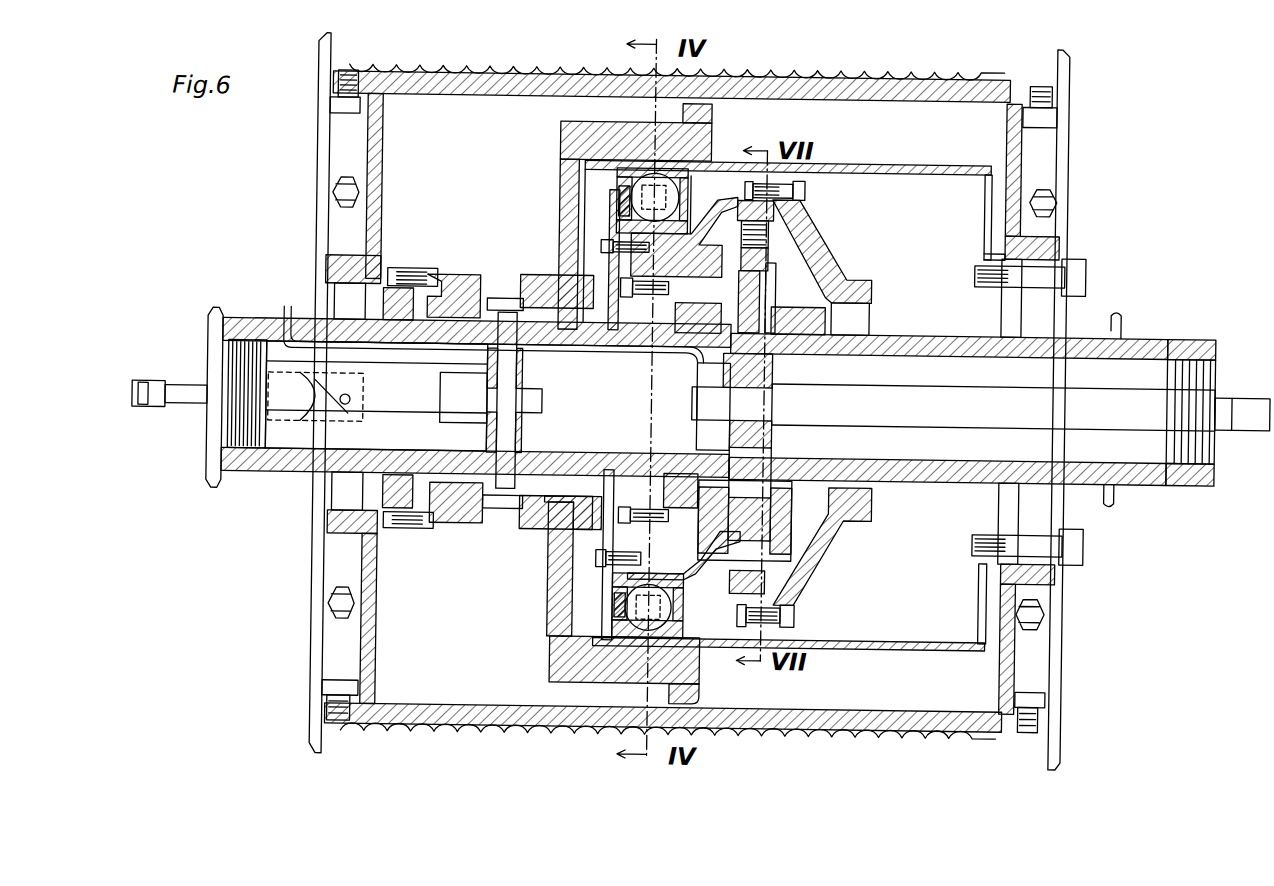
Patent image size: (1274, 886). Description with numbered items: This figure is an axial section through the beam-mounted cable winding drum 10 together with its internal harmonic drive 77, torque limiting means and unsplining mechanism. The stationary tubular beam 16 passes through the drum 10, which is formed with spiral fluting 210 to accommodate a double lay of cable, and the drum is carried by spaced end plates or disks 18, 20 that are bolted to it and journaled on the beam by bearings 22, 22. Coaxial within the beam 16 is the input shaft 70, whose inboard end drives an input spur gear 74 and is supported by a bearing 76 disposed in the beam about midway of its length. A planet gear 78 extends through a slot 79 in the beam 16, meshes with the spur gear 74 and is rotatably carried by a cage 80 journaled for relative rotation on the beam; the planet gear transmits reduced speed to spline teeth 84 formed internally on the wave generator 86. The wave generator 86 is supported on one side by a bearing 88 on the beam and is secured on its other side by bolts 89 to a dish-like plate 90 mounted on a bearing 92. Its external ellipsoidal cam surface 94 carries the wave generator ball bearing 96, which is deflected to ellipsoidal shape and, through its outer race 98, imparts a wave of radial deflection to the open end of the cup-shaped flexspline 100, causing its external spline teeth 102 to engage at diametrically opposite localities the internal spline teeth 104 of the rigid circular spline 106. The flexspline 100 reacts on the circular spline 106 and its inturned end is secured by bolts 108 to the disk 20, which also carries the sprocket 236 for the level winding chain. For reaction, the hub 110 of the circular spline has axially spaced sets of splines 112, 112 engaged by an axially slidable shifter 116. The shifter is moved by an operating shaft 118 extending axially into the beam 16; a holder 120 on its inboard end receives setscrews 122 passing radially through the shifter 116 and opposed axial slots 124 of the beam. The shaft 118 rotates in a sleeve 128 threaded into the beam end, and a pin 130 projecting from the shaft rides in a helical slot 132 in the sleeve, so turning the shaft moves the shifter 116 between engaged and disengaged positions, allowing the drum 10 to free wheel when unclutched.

The cable winding drum 10 is at (808, 72).
The tubular beam 16 is at (918, 338).
The end plate 18 is at (326, 130).
The end plate 20 is at (1067, 100).
The bearing 22 is at (345, 492).
The input shaft 70 is at (940, 422).
The input spur gear 74 is at (775, 372).
The bearing 76 is at (696, 428).
The harmonic drive 77 is at (731, 142).
The planet gear 78 is at (770, 468).
The slot 79 is at (742, 452).
The cage 80 is at (805, 540).
The spline teeth 84 is at (770, 255).
The wave generator 86 is at (684, 237).
The bearing 88 is at (655, 510).
The bolts 89 is at (804, 190).
The dish-like plate 90 is at (822, 265).
The bearing 92 is at (862, 325).
The ellipsoidal cam surface 94 is at (612, 214).
The wave generator ball bearing 96 is at (699, 205).
The outer race 98 is at (686, 178).
The flexspline 100 is at (904, 168).
The external spline teeth 102 is at (720, 165).
The spline teeth 104 is at (700, 648).
The circular spline 106 is at (548, 590).
The bolts 108 is at (1086, 270).
The hub 110 is at (452, 272).
The splines 112 is at (512, 282).
The shifter 116 is at (416, 396).
The operating shaft 118 is at (440, 410).
The holder 120 is at (533, 432).
The setscrews 122 is at (497, 342).
The axial slots 124 is at (486, 362).
The sleeve 128 is at (365, 370).
The pin 130 is at (352, 408).
The helical slot 132 is at (345, 428).
The spiral fluting 210 is at (886, 737).
The sprocket 236 is at (1122, 316).